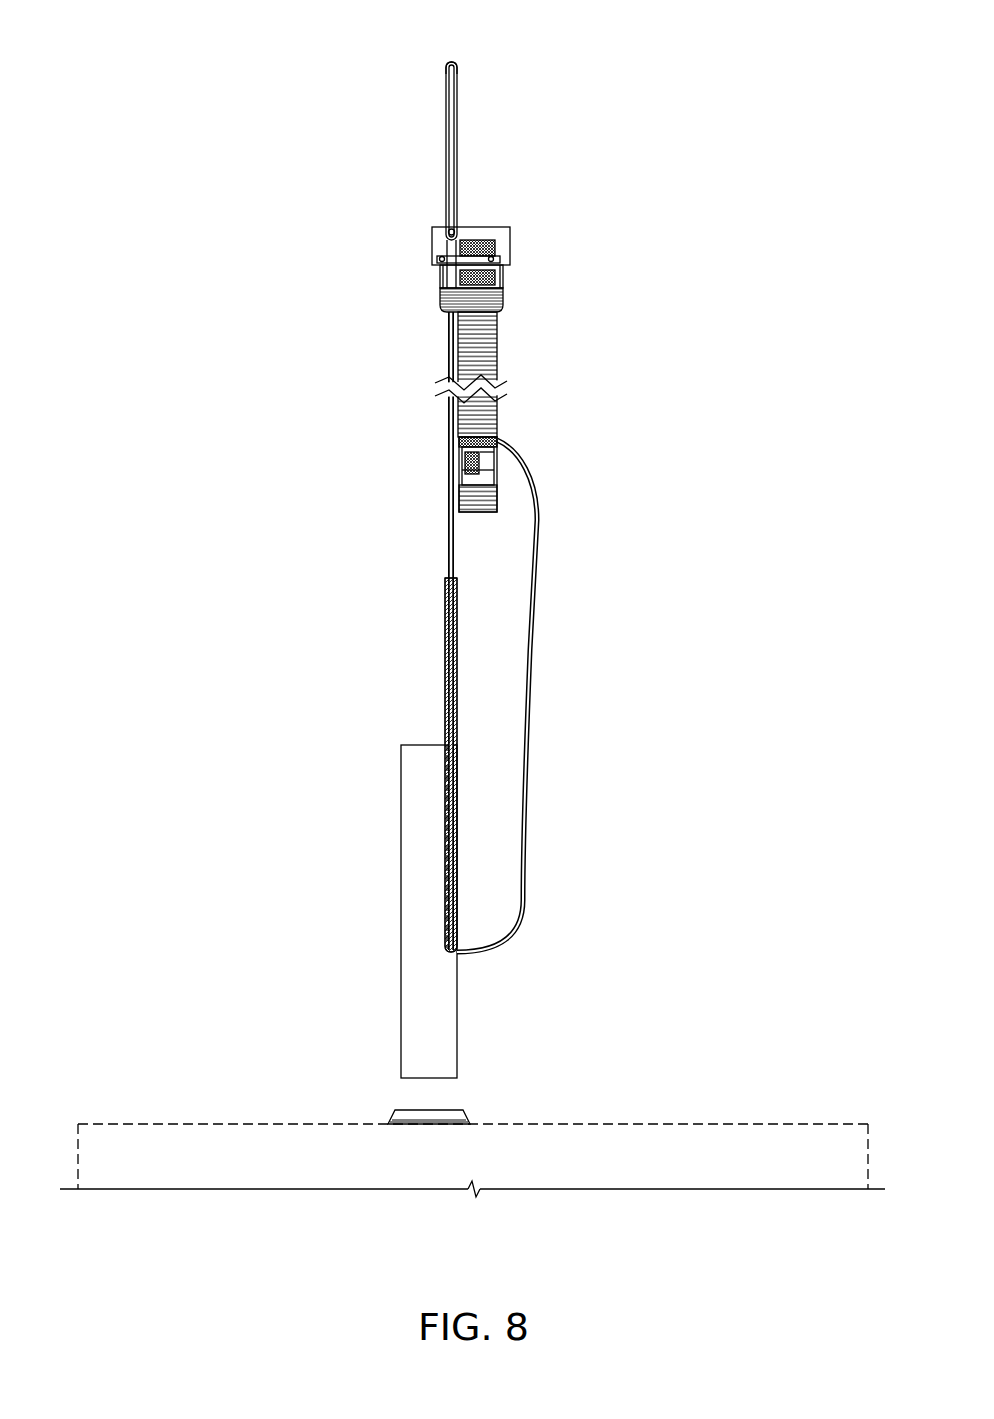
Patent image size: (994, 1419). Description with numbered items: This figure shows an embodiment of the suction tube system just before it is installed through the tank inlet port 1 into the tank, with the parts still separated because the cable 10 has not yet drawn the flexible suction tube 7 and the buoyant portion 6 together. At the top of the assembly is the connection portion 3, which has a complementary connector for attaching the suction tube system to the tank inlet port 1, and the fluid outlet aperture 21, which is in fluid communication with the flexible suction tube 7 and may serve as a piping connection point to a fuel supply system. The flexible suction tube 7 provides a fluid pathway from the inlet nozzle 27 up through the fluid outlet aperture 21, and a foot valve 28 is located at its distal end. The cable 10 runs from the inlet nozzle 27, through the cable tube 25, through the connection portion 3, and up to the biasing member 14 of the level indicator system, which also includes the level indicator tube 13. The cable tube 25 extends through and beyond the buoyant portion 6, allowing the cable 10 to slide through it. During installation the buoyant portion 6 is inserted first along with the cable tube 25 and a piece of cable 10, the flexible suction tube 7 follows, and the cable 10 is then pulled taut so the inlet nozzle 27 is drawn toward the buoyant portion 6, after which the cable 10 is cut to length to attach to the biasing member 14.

The tank inlet port 1 is at (392, 1118).
The connection portion 3 is at (504, 292).
The buoyant portion 6 is at (401, 818).
The flexible suction tube 7 is at (498, 362).
The cable 10 is at (447, 534).
The level indicator tube 13 is at (458, 72).
The biasing member 14 is at (490, 151).
The fluid outlet aperture 21 is at (482, 210).
The cable tube 25 is at (445, 677).
The inlet nozzle 27 is at (543, 526).
The foot valve 28 is at (498, 497).